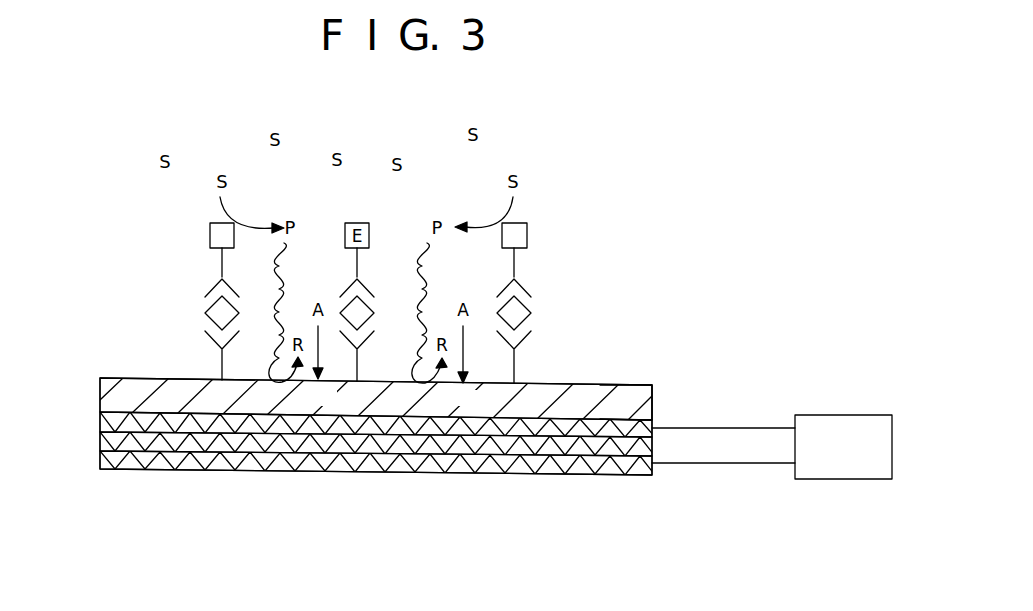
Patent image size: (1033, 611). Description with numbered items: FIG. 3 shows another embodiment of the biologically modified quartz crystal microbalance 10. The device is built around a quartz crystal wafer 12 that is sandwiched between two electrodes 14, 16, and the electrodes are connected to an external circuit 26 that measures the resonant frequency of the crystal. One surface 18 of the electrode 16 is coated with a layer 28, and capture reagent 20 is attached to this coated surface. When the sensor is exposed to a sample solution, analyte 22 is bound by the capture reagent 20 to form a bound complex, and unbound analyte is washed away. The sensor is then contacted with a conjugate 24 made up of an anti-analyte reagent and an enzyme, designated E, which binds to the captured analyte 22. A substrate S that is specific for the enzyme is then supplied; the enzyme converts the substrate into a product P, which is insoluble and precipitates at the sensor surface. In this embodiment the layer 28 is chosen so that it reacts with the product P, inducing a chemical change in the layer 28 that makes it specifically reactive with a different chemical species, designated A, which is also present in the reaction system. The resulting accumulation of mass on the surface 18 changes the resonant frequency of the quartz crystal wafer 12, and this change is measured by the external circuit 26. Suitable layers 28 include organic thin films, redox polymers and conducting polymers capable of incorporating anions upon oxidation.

The biologically modified quartz crystal microbalance 10 is at (80, 322).
The quartz crystal wafer 12 is at (175, 442).
The electrode 14 is at (262, 470).
The electrode 16 is at (620, 430).
The surface 18 is at (627, 413).
The capture reagent 20 is at (517, 367).
The analyte 22 is at (198, 309).
The conjugate 24 is at (518, 270).
The external circuit 26 is at (842, 462).
The layer 28 is at (192, 392).